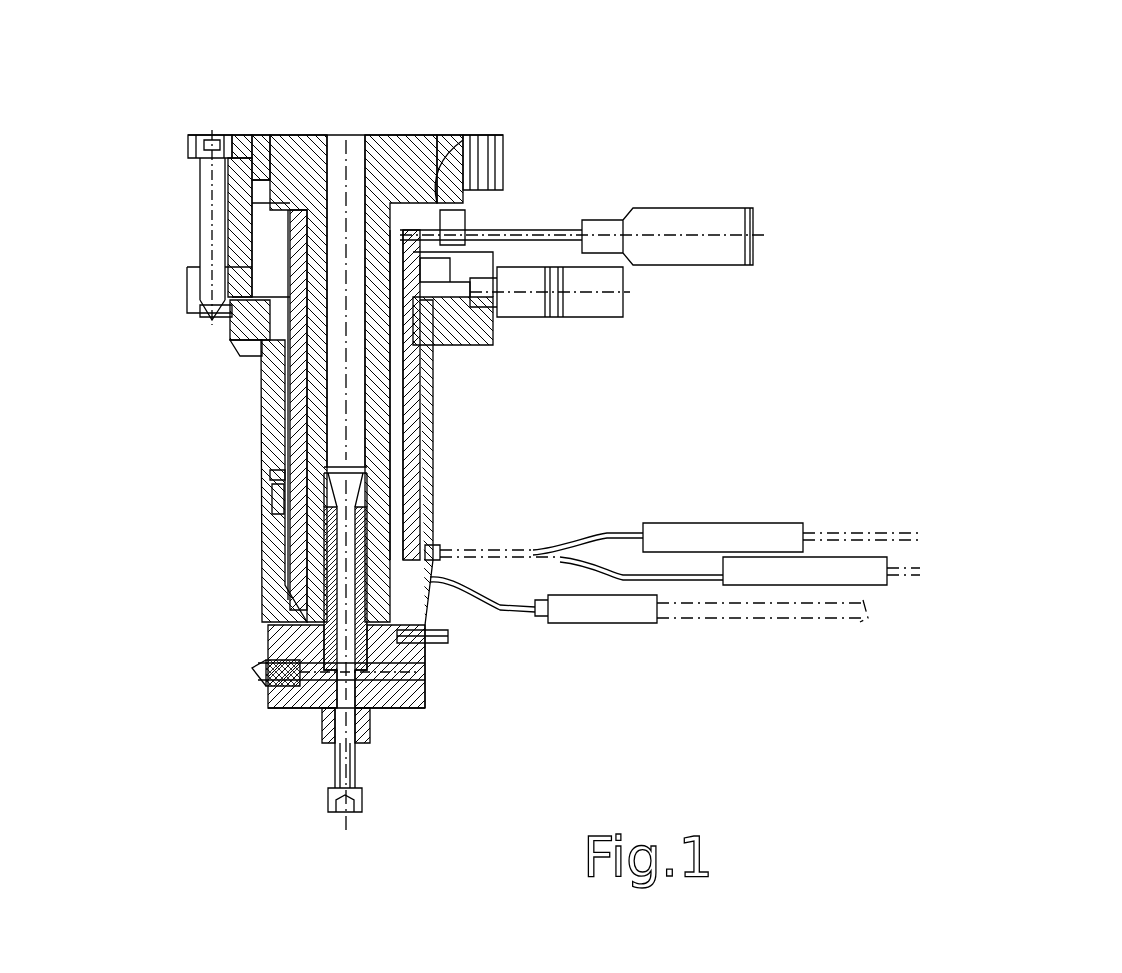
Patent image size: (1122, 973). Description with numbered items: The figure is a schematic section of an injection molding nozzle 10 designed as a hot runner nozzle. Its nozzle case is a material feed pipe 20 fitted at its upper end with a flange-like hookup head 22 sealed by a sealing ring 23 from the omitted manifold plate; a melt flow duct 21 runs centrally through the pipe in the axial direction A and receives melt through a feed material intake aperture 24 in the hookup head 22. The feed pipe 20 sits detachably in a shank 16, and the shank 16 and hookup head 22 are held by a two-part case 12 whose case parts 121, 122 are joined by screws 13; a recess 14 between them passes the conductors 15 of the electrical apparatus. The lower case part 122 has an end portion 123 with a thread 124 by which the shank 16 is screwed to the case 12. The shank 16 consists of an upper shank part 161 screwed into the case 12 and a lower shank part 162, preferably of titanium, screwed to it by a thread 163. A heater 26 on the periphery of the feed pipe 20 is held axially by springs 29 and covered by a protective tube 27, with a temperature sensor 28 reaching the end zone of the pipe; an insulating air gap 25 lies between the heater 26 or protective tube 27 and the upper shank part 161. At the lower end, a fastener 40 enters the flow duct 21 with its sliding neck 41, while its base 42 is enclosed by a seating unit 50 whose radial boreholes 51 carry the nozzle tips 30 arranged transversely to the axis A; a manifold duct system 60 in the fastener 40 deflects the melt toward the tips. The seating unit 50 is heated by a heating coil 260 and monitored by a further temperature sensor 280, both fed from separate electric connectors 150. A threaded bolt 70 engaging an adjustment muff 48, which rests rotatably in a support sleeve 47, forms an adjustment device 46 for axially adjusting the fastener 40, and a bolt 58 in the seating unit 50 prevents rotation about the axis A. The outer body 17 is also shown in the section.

The injection molding nozzle 10 is at (104, 68).
The case 12 is at (183, 258).
The screw 13 is at (205, 190).
The recess 14 is at (455, 222).
The conductors 15 is at (517, 232).
The shank 16 is at (250, 414).
The outer body 17 is at (298, 610).
The material feed pipe 20 is at (303, 135).
The melt flow duct 21 is at (337, 135).
The hookup head 22 is at (260, 135).
The sealing ring 23 is at (402, 135).
The feed material intake aperture 24 is at (353, 135).
The insulating air gap 25 is at (412, 433).
The heater 26 is at (395, 348).
The protective tube 27 is at (410, 390).
The temperature sensor 28 is at (400, 560).
The springs 29 is at (472, 135).
The nozzle tip 30 is at (236, 680).
The fastener 40 is at (298, 720).
The neck 41 is at (392, 500).
The base 42 is at (410, 708).
The adjustment device 46 is at (392, 708).
The support sleeve 47 is at (322, 735).
The adjustment muff 48 is at (374, 730).
The seating unit 50 is at (256, 635).
The radial boreholes 51 is at (270, 650).
The bolt 58 is at (452, 645).
The manifold duct system 60 is at (433, 700).
The threaded bolt 70 is at (328, 800).
The upper case part 121 is at (237, 133).
The lower case part 122 is at (205, 312).
The end portion 123 is at (212, 330).
The thread 124 is at (240, 345).
The electric connectors 150 is at (711, 573).
The upper shank part 161 is at (255, 412).
The lower shank part 162 is at (275, 500).
The thread 163 is at (270, 474).
The heating coil 260 is at (533, 552).
The temperature sensor 280 is at (500, 603).
The axial direction A is at (345, 133).